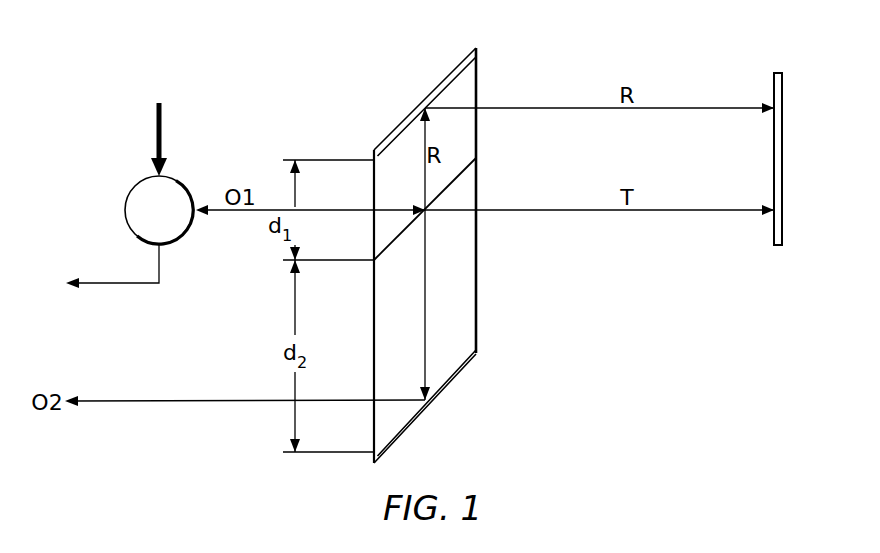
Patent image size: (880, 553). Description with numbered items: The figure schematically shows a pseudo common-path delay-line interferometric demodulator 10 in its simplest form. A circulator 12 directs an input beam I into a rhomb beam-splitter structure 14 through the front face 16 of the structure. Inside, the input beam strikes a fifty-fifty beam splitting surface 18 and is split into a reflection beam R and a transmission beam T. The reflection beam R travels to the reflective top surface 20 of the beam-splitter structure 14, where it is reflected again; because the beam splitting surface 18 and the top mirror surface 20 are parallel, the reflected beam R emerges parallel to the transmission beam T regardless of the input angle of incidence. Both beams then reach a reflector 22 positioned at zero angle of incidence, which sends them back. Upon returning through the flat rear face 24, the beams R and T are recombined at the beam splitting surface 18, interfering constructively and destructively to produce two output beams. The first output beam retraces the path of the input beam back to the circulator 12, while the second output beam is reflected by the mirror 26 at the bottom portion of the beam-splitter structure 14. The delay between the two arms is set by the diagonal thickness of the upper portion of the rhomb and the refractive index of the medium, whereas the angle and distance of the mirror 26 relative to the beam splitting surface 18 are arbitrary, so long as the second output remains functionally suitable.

The pseudo common-path delay-line interferometric demodulator 10 is at (312, 60).
The circulator 12 is at (127, 196).
The rhomb beam-splitter structure 14 is at (428, 255).
The front face 16 is at (373, 294).
The beam splitting surface 18 is at (393, 243).
The reflective top surface 20 is at (460, 80).
The reflector 22 is at (770, 158).
The flat rear face 24 is at (478, 273).
The mirror 26 is at (453, 378).